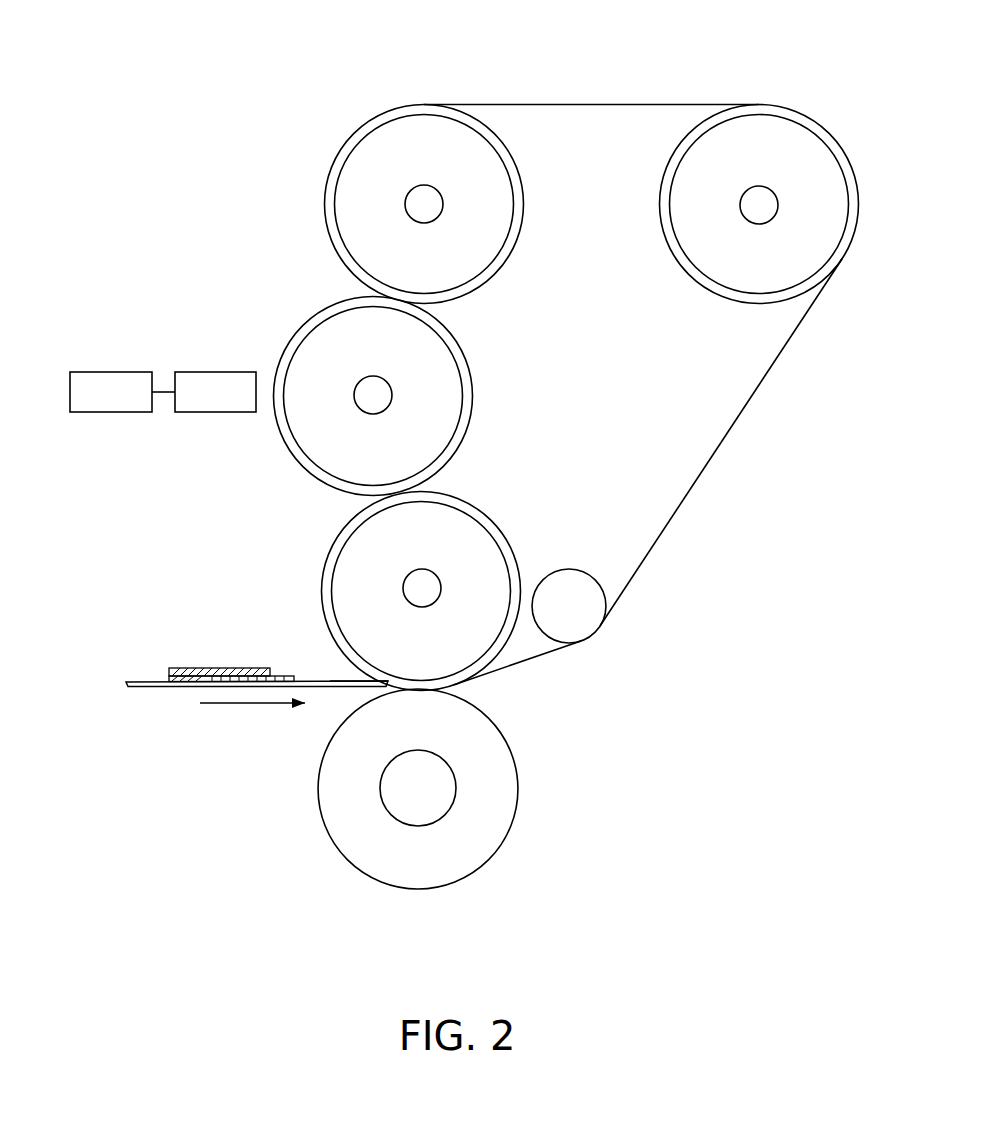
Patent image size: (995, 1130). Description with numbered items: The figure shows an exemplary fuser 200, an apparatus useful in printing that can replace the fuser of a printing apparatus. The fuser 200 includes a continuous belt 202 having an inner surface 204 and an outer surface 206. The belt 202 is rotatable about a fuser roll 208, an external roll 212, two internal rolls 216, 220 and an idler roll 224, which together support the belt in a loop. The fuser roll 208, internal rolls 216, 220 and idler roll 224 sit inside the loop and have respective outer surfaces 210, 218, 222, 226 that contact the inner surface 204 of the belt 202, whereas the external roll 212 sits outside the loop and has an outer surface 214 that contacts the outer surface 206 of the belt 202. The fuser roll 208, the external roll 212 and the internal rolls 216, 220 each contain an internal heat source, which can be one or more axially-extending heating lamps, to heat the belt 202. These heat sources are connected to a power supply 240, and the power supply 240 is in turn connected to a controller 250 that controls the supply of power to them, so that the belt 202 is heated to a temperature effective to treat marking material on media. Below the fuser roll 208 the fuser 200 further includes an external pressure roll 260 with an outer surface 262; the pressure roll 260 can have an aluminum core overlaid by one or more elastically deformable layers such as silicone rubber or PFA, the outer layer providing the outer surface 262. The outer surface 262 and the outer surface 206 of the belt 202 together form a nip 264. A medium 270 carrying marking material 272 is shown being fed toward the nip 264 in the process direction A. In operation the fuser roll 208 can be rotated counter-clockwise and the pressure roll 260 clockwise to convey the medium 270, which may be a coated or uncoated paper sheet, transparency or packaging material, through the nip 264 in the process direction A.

The fuser 200 is at (596, 63).
The continuous belt 202 is at (764, 378).
The inner surface 204 is at (732, 411).
The outer surface 206 is at (735, 434).
The fuser roll 208 is at (442, 496).
The outer surface 210 is at (517, 543).
The external roll 212 is at (300, 453).
The outer surface 214 is at (316, 483).
The internal roll 216 is at (487, 272).
The outer surface 218 is at (524, 172).
The internal roll 220 is at (693, 272).
The outer surface 222 is at (658, 191).
The idler roll 224 is at (571, 572).
The outer surface 226 is at (606, 576).
The power supply 240 is at (197, 405).
The controller 250 is at (93, 405).
The external pressure roll 260 is at (490, 836).
The outer surface 262 is at (318, 822).
The nip 264 is at (356, 675).
The medium 270 is at (148, 680).
The marking material 272 is at (205, 668).
The process direction A is at (250, 708).